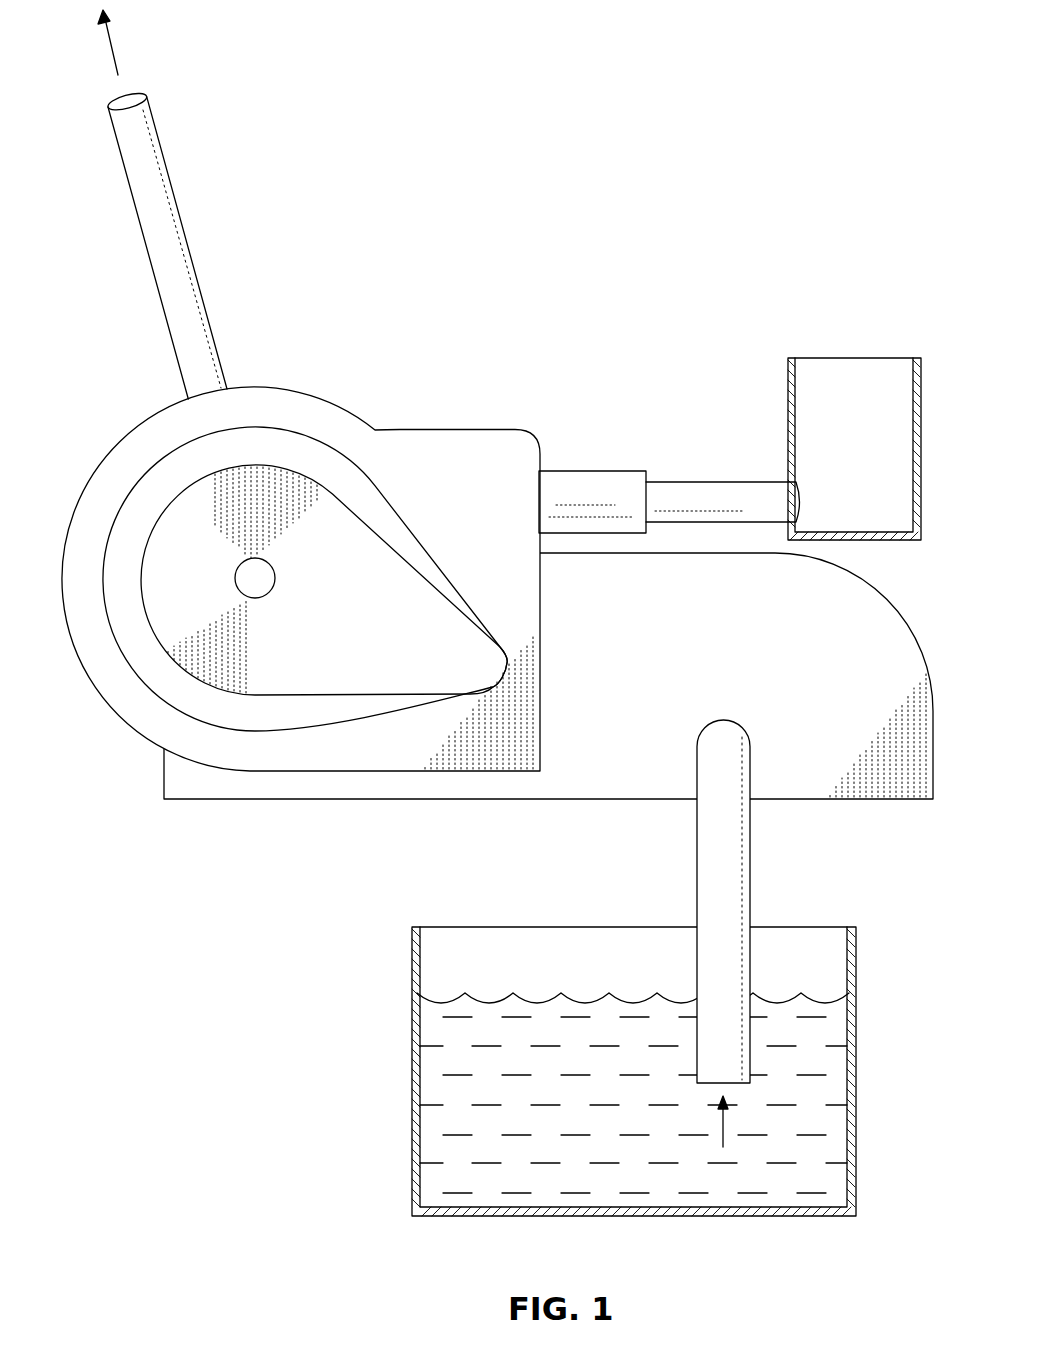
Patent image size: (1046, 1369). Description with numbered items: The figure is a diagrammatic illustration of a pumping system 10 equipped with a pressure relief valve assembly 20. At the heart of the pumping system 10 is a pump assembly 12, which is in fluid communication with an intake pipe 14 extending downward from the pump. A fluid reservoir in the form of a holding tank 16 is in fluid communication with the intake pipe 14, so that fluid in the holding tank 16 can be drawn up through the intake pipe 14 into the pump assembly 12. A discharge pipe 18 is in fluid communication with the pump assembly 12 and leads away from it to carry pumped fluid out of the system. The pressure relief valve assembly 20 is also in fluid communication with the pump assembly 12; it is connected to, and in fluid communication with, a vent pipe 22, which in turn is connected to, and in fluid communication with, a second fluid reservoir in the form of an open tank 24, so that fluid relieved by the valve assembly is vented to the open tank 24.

The pumping system 10 is at (692, 172).
The pump assembly 12 is at (135, 430).
The intake pipe 14 is at (750, 848).
The holding tank 16 is at (856, 1070).
The discharge pipe 18 is at (185, 237).
The pressure relief valve assembly 20 is at (593, 482).
The vent pipe 22 is at (716, 482).
The open tank 24 is at (853, 358).